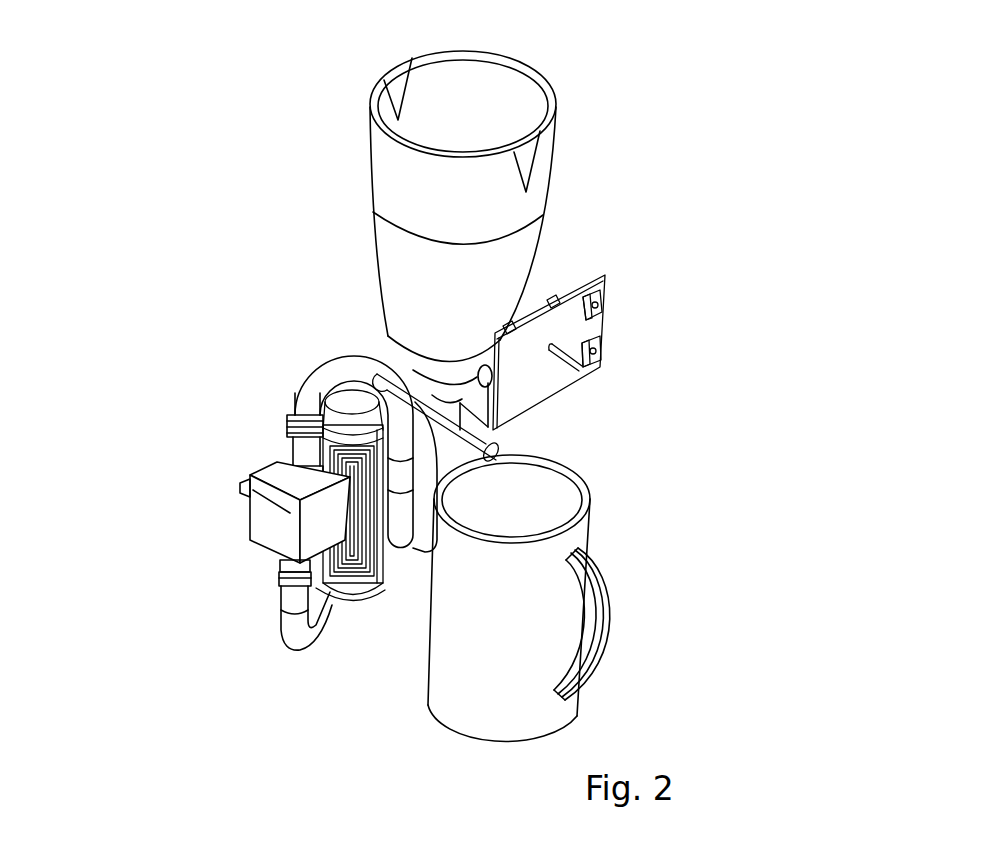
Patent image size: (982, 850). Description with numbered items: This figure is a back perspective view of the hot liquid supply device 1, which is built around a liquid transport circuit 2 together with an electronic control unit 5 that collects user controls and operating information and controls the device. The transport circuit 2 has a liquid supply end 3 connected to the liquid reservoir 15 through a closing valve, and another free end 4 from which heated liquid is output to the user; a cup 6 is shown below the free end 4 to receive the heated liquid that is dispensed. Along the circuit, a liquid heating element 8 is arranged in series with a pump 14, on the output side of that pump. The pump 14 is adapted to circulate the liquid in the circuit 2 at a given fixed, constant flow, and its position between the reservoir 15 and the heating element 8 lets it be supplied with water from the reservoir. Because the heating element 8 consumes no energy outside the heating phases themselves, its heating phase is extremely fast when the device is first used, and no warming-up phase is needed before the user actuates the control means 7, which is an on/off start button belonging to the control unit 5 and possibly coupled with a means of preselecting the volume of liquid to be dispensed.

The hot liquid supply device 1 is at (272, 64).
The liquid transport circuit 2 is at (316, 368).
The liquid supply end 3 is at (442, 407).
The free end 4 is at (497, 433).
The electronic control unit 5 is at (607, 283).
The container 6 is at (550, 510).
The control means 7 is at (590, 367).
The liquid heating element 8 is at (359, 592).
The pump 14 is at (290, 507).
The liquid reservoir 15 is at (378, 128).